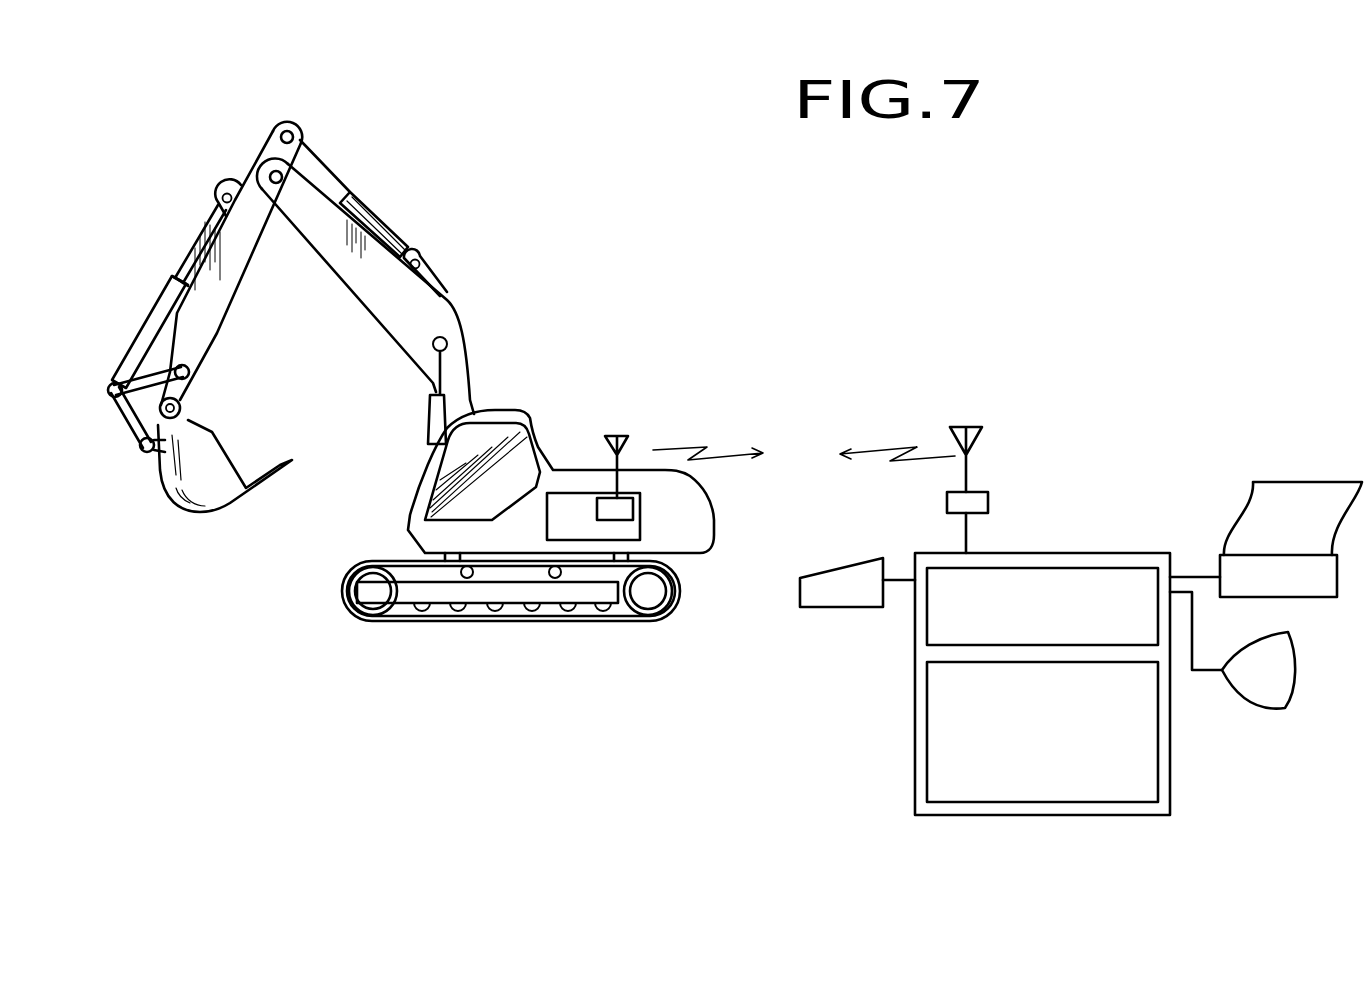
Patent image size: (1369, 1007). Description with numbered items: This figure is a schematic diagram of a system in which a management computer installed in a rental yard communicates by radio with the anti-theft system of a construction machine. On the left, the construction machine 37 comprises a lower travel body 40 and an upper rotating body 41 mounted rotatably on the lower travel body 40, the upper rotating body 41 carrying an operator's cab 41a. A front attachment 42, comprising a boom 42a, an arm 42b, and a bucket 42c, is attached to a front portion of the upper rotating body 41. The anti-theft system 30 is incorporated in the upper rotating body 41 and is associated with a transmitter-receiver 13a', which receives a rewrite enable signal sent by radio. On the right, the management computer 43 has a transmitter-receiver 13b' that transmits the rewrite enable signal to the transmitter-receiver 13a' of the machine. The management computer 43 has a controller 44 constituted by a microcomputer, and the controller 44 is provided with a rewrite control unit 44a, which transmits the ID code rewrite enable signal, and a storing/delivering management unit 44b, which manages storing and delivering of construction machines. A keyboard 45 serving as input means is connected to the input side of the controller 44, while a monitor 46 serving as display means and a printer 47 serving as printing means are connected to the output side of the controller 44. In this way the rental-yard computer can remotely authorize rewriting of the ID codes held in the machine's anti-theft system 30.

The construction machine 37 is at (567, 415).
The lower travel body 40 is at (328, 593).
The upper rotating body 41 is at (400, 513).
The operator's cab 41a is at (497, 437).
The front working attachment 42 is at (383, 180).
The boom 42a is at (387, 290).
The arm 42b is at (205, 333).
The bucket 42c is at (192, 458).
The anti-theft system 30 is at (641, 530).
The transmitter-receiver 13a' is at (697, 478).
The management computer 43 is at (1130, 421).
The transmitter-receiver 13b' is at (1018, 490).
The controller 44 is at (1130, 552).
The rewrite control unit 44a is at (925, 636).
The storing/delivering management unit 44b is at (927, 750).
The keyboard 45 is at (852, 575).
The monitor 46 is at (1268, 693).
The printer 47 is at (1305, 592).